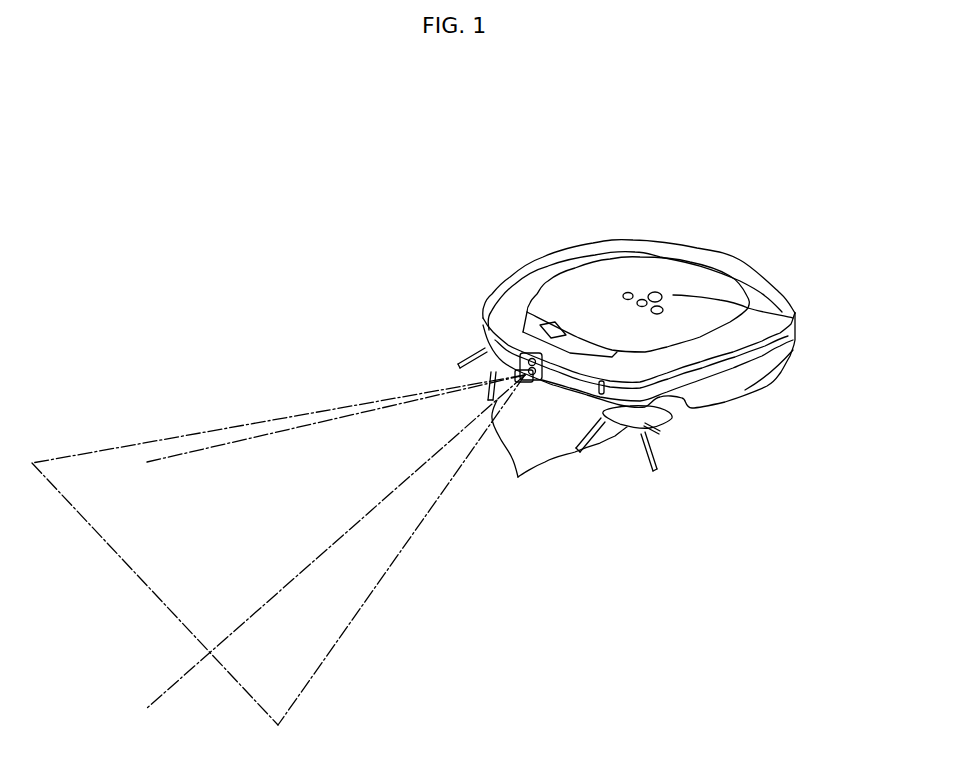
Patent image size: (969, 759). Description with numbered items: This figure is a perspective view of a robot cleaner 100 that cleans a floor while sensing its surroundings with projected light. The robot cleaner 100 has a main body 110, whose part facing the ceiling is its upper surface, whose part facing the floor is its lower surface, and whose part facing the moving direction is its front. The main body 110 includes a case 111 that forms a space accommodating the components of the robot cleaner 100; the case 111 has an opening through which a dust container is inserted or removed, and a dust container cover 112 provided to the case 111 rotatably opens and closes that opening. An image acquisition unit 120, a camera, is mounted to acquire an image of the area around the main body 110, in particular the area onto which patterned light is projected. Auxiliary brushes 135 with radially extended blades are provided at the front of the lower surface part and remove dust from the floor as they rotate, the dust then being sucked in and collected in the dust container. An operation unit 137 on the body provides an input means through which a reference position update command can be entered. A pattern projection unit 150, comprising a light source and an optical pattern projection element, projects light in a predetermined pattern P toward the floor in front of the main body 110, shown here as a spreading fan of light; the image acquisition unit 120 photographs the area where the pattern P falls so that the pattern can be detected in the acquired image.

The robot cleaner 100 is at (435, 132).
The main body 110 is at (740, 140).
The case 111 is at (697, 255).
The dust container cover 112 is at (632, 268).
The image acquisition unit 120 is at (524, 352).
The auxiliary brushes 135 is at (518, 477).
The operation unit 137 is at (793, 318).
The pattern projection unit 150 is at (495, 380).
The pattern P is at (140, 589).